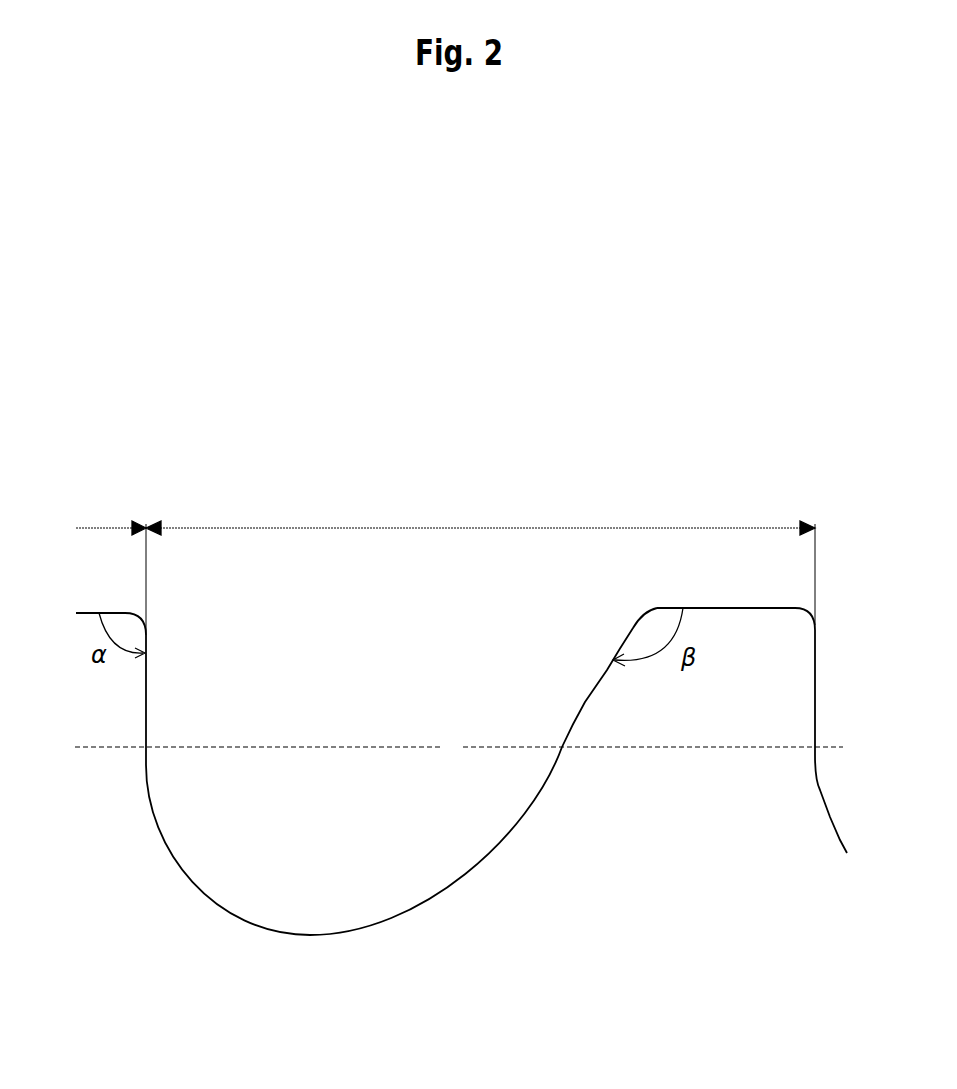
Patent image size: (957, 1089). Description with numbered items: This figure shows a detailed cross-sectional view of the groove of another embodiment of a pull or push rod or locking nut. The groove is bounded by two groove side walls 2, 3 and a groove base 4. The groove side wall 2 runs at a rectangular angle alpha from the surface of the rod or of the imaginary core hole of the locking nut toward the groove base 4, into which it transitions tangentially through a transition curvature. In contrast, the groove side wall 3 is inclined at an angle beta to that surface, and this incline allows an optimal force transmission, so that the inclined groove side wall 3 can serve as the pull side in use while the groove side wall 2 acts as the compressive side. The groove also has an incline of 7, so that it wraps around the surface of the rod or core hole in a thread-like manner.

The groove side wall 2 is at (147, 718).
The groove side wall 3 is at (577, 717).
The groove base 4 is at (275, 925).
The incline 7 is at (445, 559).